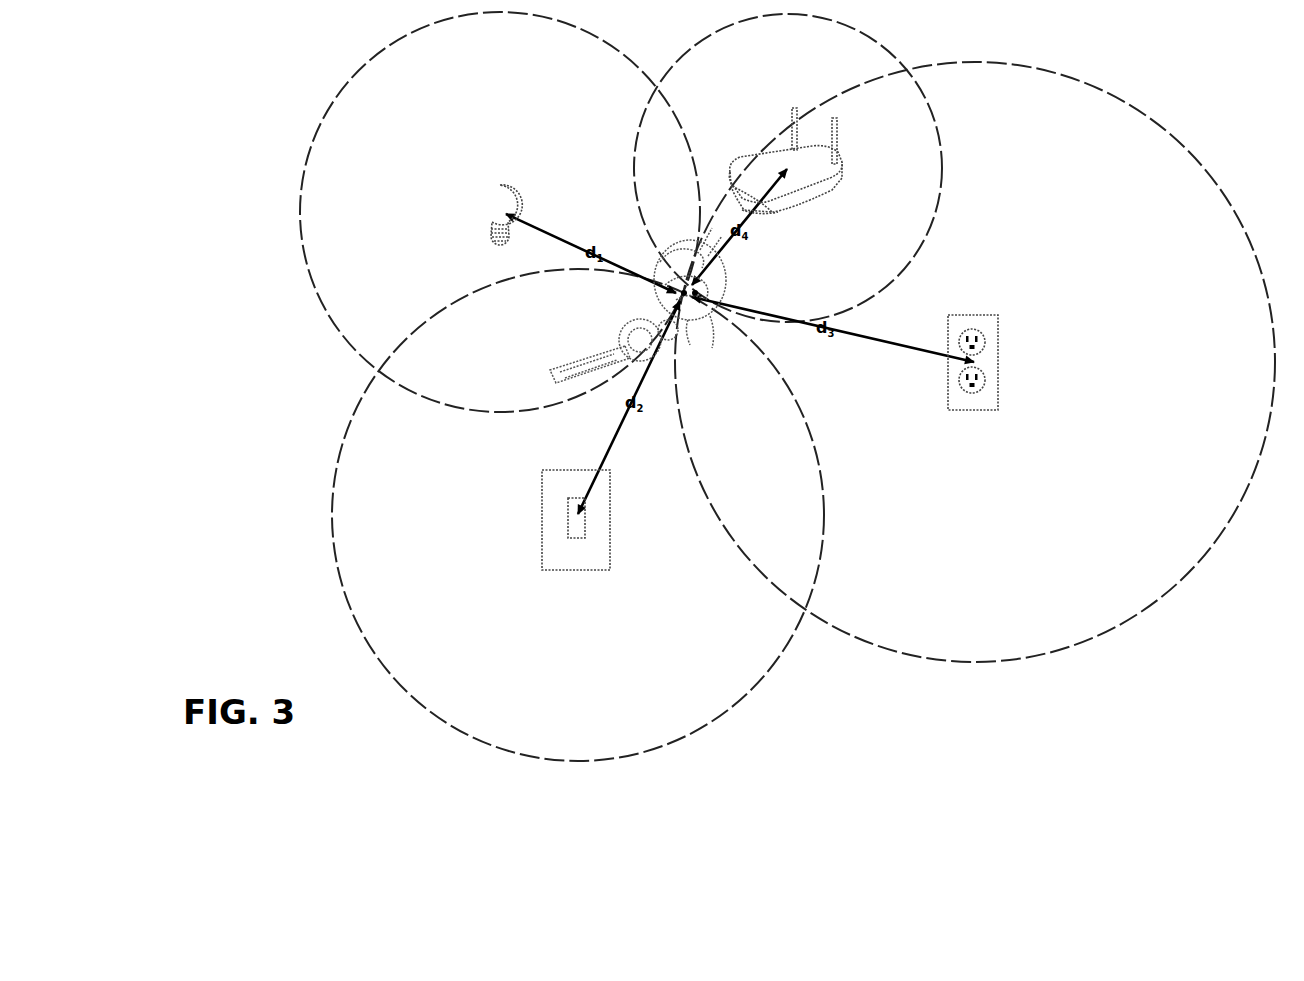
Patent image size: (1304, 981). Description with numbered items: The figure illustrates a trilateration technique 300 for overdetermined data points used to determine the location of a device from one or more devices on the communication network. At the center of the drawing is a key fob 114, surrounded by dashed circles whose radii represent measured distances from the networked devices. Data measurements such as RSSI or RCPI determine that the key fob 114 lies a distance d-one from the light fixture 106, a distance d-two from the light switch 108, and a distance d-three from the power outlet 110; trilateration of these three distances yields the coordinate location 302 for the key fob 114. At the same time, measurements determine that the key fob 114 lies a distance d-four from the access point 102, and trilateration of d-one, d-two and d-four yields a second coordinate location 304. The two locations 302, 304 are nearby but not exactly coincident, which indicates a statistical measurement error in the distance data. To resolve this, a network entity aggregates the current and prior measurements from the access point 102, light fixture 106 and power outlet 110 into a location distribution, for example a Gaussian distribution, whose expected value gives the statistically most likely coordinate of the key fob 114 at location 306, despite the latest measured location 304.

The location determination environment 300 is at (256, 98).
The access point 102 is at (840, 159).
The light fixture 106 is at (515, 194).
The light switch 108 is at (611, 530).
The power outlet 110 is at (1000, 348).
The key fob 114 is at (648, 286).
The coordinate location 302 is at (688, 303).
The coordinate location 304 is at (684, 292).
The location 306 is at (696, 293).